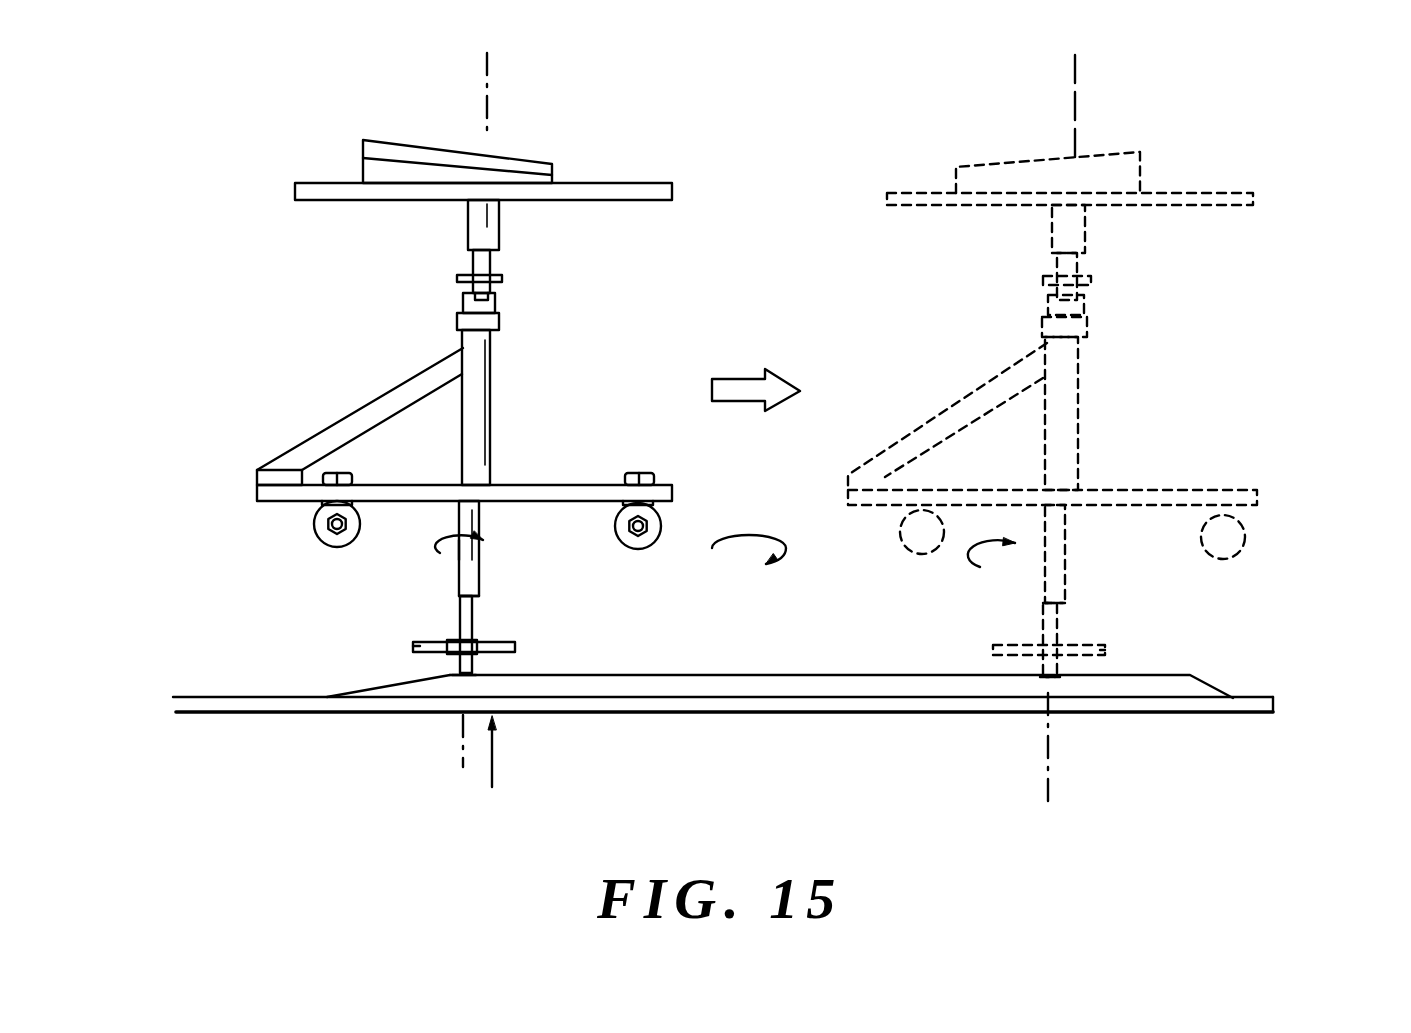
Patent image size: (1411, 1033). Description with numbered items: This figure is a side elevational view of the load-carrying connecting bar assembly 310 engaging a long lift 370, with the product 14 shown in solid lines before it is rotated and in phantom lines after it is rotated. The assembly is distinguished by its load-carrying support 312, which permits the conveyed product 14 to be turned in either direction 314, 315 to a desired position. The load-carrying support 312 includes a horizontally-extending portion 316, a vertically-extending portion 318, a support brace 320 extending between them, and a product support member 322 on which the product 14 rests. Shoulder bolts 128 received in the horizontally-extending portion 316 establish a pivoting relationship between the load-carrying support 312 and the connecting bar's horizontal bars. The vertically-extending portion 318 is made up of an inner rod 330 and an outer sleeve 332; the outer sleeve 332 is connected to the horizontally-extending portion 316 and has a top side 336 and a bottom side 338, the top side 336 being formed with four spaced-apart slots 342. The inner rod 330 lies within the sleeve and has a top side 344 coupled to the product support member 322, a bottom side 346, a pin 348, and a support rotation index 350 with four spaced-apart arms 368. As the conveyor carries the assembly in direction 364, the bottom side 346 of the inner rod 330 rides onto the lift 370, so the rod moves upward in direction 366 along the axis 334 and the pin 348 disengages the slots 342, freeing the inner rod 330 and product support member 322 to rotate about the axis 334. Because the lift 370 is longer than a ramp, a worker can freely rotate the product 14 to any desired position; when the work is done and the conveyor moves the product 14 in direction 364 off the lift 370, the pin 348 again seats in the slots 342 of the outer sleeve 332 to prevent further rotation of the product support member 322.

The product 14 is at (400, 148).
The shoulder bolts 128 is at (340, 473).
The load-carrying connecting bar assembly 310 is at (630, 354).
The load-carrying support 312 is at (348, 398).
The direction 314 is at (440, 550).
The direction 315 is at (758, 530).
The horizontally-extending portion 316 is at (415, 505).
The vertically-extending portion 318 is at (512, 393).
The support brace 320 is at (423, 383).
The product support member 322 is at (646, 184).
The inner rod 330 is at (492, 262).
The outer sleeve 332 is at (491, 428).
The axis 334 is at (484, 127).
The top side 336 is at (460, 297).
The bottom side 338 is at (480, 597).
The slots 342 is at (495, 298).
The top side 344 is at (468, 250).
The bottom side 346 is at (465, 674).
The pin 348 is at (500, 278).
The support rotation index 350 is at (398, 637).
The direction 364 is at (735, 379).
The direction 366 is at (494, 758).
The arms 368 is at (517, 648).
The lift 370 is at (705, 680).